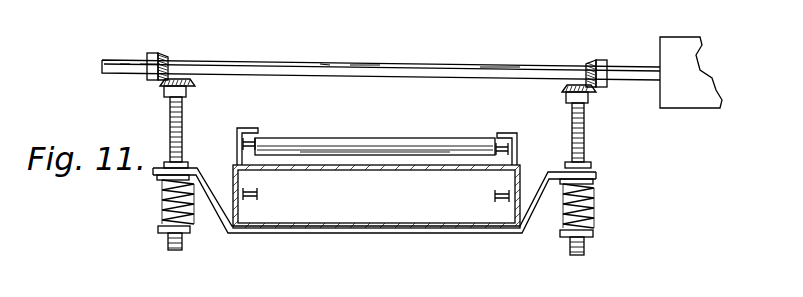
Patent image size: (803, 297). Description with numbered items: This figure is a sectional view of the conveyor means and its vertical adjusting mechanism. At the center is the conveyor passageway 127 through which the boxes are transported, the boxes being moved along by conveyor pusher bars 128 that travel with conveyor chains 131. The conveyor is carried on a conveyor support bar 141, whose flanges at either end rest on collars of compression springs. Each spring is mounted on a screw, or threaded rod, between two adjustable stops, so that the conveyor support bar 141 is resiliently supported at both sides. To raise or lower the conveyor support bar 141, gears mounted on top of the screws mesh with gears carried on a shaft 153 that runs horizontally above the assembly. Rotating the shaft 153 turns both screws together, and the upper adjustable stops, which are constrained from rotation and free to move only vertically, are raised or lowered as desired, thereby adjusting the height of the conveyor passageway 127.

The conveyor passageway 127 is at (356, 134).
The conveyor pusher bars 128 is at (443, 147).
The conveyor chains 131 is at (505, 192).
The conveyor support bar 141 is at (397, 234).
The shaft 153 is at (344, 63).